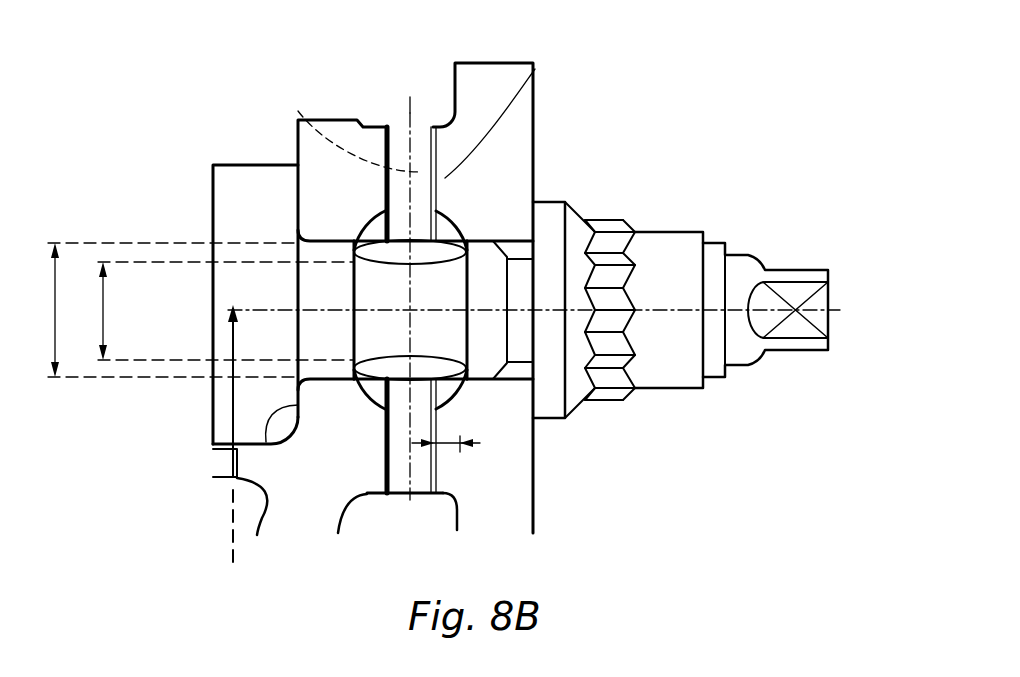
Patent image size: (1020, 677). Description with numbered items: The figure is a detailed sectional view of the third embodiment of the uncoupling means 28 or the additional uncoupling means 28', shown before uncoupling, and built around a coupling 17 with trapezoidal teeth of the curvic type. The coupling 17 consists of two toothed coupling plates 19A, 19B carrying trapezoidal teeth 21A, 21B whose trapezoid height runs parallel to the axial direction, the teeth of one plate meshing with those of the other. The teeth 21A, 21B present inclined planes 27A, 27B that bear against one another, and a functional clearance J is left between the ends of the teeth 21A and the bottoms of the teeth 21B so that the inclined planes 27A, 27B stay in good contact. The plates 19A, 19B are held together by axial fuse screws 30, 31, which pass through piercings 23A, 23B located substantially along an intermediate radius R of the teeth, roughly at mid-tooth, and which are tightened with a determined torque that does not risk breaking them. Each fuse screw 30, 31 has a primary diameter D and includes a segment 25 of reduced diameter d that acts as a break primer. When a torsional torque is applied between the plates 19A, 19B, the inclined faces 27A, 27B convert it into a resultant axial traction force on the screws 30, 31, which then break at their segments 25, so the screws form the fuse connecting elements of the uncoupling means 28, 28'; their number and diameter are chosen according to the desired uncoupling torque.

The coupling 17 is at (442, 515).
The toothed coupling plate 19A is at (343, 183).
The toothed coupling plate 19B is at (502, 173).
The trapezoidal teeth 21A is at (399, 116).
The trapezoidal teeth 21B is at (445, 147).
The piercing 23A is at (325, 241).
The piercing 23B is at (484, 241).
The segment with reduced diameter 25 is at (430, 370).
The inclined plane 27A is at (298, 111).
The inclined plane 27B is at (535, 69).
The uncoupling means 28 is at (680, 228).
The additional uncoupling means 28' is at (788, 310).
The axial fuse screw 30 is at (333, 345).
The axial fuse screw 31 is at (225, 463).
The intermediate radius R is at (233, 412).
The primary diameter D is at (164, 310).
The reduced diameter d is at (226, 311).
The functional clearance J is at (438, 470).